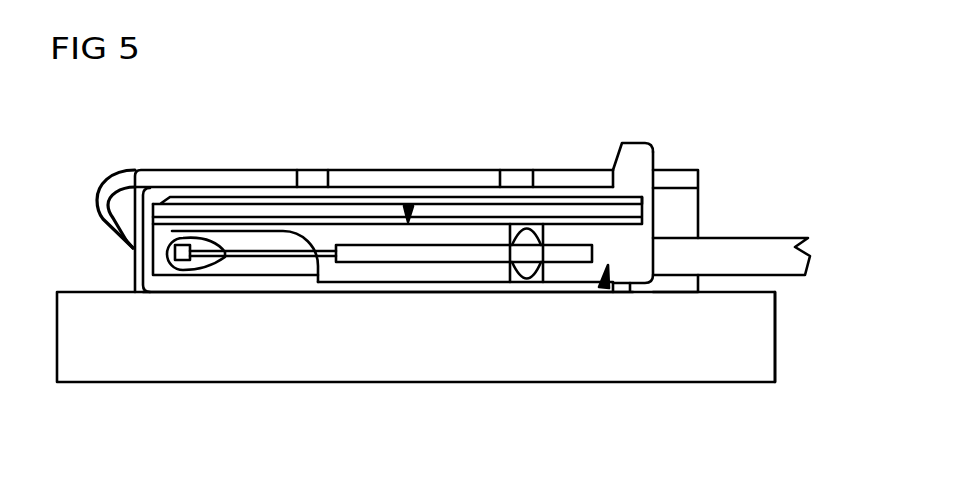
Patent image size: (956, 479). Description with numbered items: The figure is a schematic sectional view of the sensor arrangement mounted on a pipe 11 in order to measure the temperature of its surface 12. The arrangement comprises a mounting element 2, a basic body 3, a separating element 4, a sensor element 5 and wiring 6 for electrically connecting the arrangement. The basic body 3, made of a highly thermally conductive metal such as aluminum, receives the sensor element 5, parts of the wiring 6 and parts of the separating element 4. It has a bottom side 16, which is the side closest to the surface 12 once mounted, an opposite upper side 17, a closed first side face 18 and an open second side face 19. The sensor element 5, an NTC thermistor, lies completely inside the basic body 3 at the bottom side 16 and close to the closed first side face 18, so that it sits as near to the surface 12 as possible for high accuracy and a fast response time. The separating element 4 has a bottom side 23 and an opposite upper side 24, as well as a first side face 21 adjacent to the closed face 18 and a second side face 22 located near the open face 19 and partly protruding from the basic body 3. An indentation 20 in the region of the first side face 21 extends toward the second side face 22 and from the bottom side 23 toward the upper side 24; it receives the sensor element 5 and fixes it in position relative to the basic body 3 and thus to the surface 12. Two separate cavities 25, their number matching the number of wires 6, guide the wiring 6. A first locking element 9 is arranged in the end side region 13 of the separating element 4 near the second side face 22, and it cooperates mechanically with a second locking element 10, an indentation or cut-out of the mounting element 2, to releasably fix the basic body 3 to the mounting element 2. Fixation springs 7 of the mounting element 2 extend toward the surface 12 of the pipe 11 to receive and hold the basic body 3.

The mounting element 2 is at (155, 168).
The basic body 3 is at (132, 268).
The separating element 4 is at (410, 207).
The sensor element 5 is at (182, 262).
The wiring 6 is at (795, 248).
The fixation springs 7 is at (107, 174).
The first locking element 9 is at (637, 153).
The second locking element 10 is at (657, 187).
The pipe 11 is at (735, 383).
The surface 12 is at (765, 287).
The end side region 13 is at (604, 288).
The bottom side 16 is at (438, 297).
The upper side 17 is at (252, 188).
The first side face 18 is at (132, 247).
The second side face 19 is at (630, 292).
The indentation 20 is at (295, 264).
The first side face 21 is at (206, 222).
The second side face 22 is at (645, 209).
The bottom side 23 is at (487, 293).
The upper side 24 is at (580, 193).
The cavities 25 is at (358, 256).